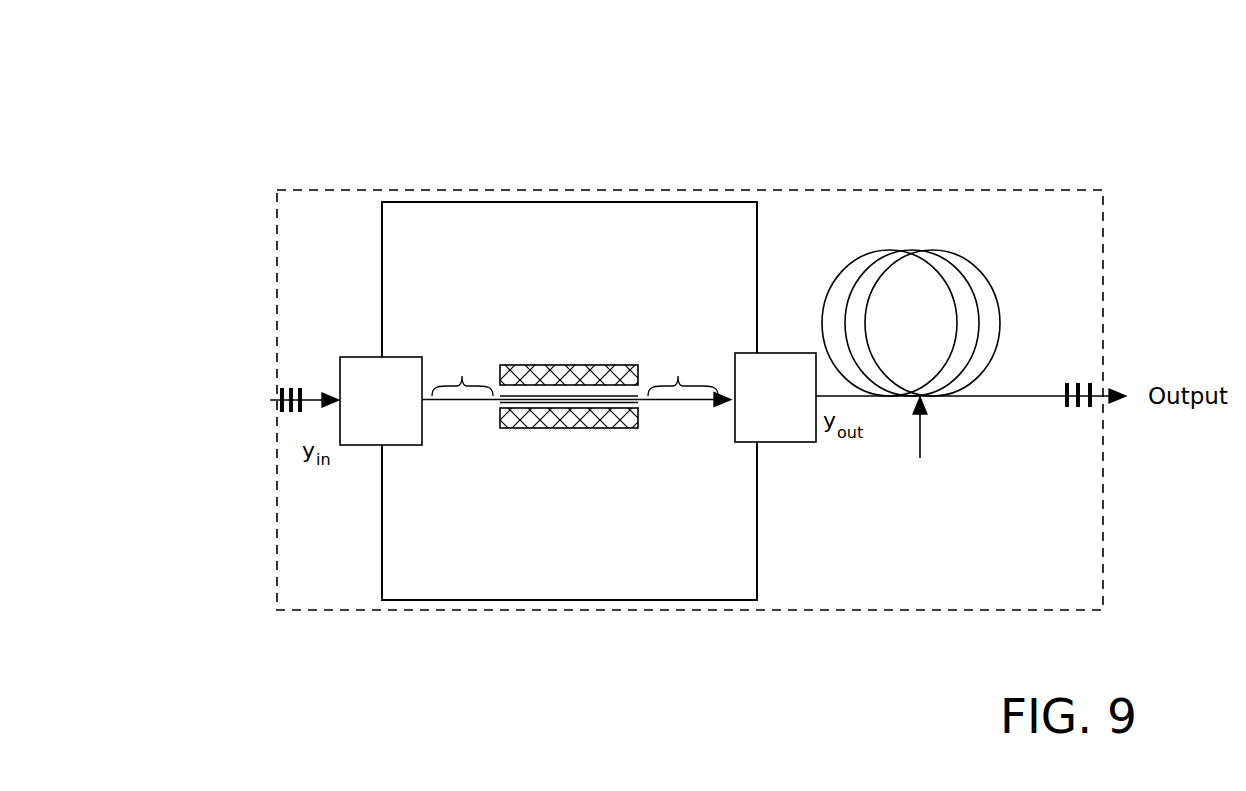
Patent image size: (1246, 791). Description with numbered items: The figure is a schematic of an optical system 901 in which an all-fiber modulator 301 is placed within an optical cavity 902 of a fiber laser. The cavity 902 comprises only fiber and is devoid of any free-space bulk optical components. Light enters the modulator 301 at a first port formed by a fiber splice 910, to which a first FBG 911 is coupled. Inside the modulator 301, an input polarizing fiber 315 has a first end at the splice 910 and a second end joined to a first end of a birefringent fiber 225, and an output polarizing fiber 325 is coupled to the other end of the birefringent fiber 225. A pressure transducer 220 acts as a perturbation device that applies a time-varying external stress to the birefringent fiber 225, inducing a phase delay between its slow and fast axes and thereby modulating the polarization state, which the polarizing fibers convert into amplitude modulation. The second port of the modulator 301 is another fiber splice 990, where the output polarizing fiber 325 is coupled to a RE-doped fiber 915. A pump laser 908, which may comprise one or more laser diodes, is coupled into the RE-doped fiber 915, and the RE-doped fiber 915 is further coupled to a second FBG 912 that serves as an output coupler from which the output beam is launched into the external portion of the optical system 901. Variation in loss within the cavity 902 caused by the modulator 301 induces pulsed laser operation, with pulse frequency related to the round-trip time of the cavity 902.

The optical system 901 is at (232, 163).
The optical cavity 902 is at (690, 400).
The modulator 301 is at (569, 401).
The fiber splice 910 is at (381, 401).
The fiber splice 990 is at (775, 397).
The first FBG 911 is at (303, 387).
The second FBG 912 is at (1070, 372).
The input polarizing fiber 315 is at (462, 370).
The output polarizing fiber 325 is at (683, 370).
The pressure transducer 220 is at (527, 369).
The birefringent fiber 225 is at (508, 405).
The RE-doped fiber 915 is at (940, 304).
The pump laser 908 is at (930, 478).